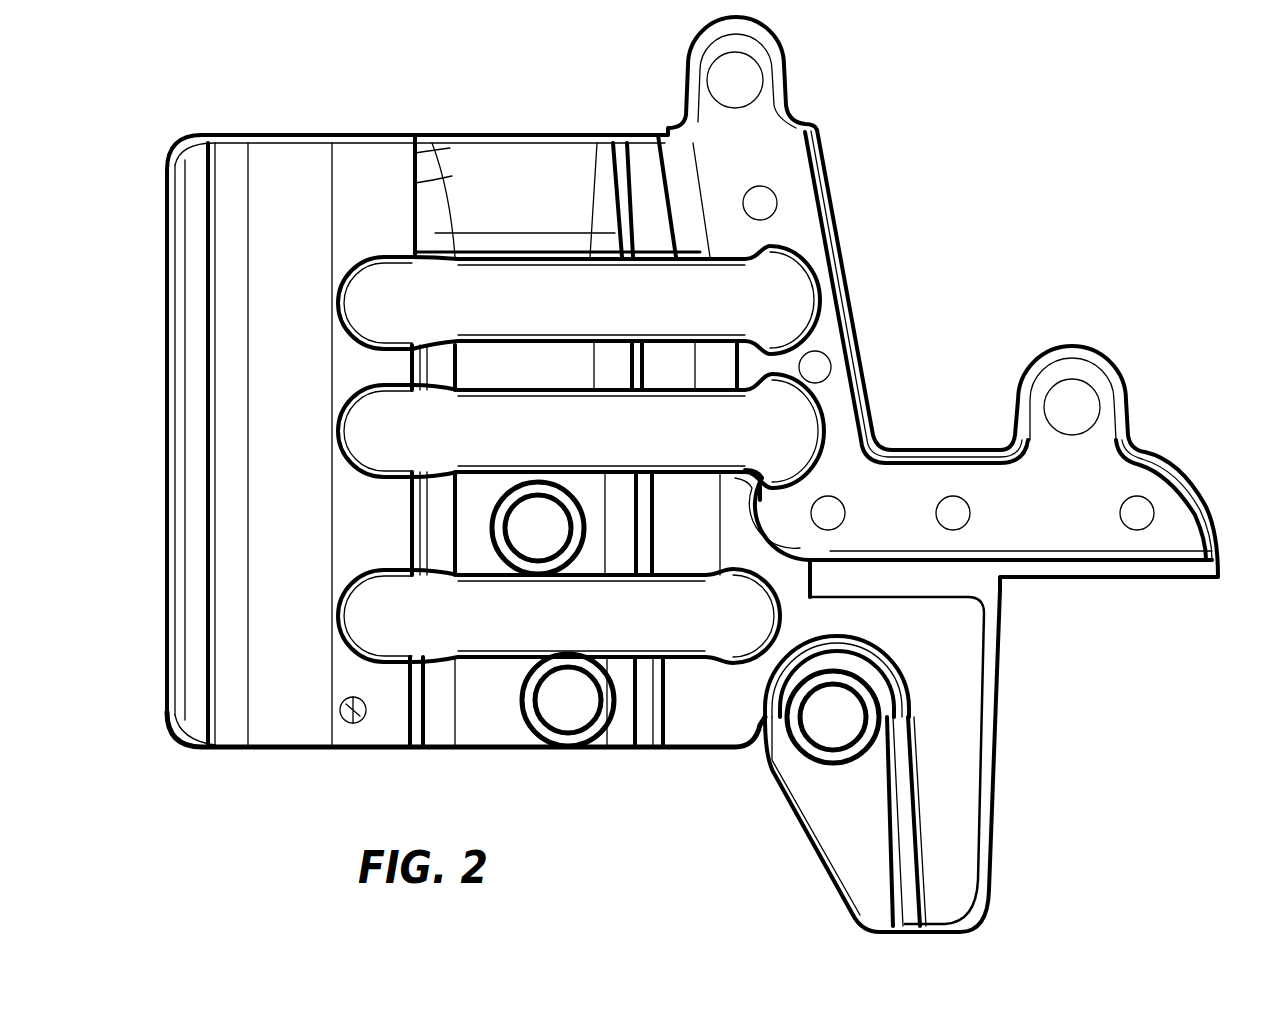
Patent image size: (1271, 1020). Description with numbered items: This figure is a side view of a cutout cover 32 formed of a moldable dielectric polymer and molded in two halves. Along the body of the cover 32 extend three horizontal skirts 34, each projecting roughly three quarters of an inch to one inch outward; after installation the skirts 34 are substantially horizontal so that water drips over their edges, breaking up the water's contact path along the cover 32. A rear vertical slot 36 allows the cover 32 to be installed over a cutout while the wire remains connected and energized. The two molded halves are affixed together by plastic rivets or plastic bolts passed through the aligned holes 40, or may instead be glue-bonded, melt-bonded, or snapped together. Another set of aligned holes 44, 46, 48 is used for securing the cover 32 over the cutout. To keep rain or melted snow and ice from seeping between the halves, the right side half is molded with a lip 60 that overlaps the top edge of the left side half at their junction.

The cutout cover 32 is at (915, 170).
The horizontal skirts 34 is at (385, 258).
The rear vertical slot 36 is at (156, 406).
The aligned holes 40 is at (760, 203).
The aligned hole 44 is at (528, 545).
The aligned hole 46 is at (566, 712).
The aligned hole 48 is at (828, 720).
The lip 60 is at (850, 292).